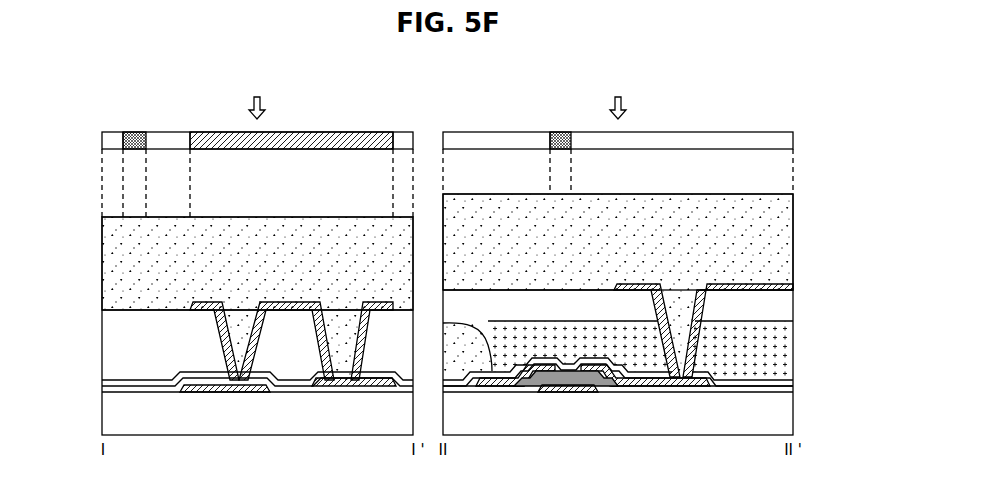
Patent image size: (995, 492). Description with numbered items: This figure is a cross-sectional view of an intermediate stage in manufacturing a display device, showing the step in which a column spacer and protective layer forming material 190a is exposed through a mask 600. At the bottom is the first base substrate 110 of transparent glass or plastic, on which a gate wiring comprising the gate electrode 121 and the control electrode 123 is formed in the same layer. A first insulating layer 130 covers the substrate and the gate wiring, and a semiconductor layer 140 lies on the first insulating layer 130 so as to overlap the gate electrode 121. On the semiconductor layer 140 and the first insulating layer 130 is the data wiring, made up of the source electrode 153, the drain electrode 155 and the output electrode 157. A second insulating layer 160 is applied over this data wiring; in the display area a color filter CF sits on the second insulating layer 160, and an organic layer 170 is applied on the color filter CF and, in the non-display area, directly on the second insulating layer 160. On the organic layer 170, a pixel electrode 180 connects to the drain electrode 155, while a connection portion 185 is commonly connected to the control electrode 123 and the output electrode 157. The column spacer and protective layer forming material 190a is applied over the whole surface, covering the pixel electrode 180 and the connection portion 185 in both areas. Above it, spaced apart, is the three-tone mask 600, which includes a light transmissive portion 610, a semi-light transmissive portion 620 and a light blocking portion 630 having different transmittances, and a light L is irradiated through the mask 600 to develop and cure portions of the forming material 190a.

The mask 600 is at (411, 132).
The light transmissive portion 610 is at (110, 133).
The semi-light transmissive portion 620 is at (325, 133).
The light blocking portion 630 is at (134, 133).
The light L is at (437, 98).
The first base substrate 110 is at (110, 412).
The gate electrode 121 is at (567, 394).
The control electrode 123 is at (213, 394).
The first insulating layer 130 is at (110, 389).
The semiconductor layer 140 is at (525, 386).
The source electrode 153 is at (486, 387).
The drain electrode 155 is at (643, 387).
The output electrode 157 is at (355, 387).
The second insulating layer 160 is at (110, 380).
The organic layer 170 is at (110, 347).
The pixel electrode 180 is at (790, 289).
The connection portion 185 is at (238, 383).
The column spacer and protective layer forming material 190a is at (110, 264).
The color filter CF is at (790, 352).